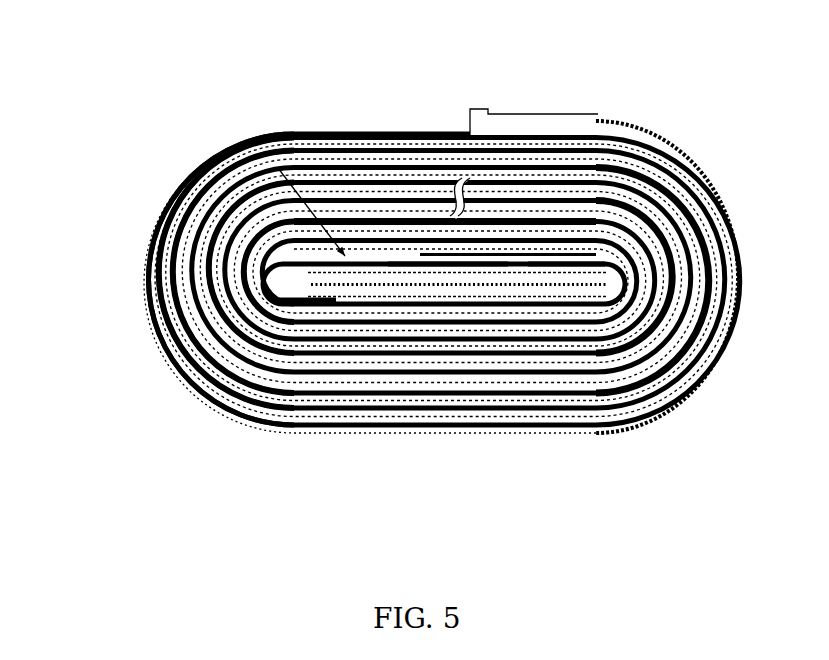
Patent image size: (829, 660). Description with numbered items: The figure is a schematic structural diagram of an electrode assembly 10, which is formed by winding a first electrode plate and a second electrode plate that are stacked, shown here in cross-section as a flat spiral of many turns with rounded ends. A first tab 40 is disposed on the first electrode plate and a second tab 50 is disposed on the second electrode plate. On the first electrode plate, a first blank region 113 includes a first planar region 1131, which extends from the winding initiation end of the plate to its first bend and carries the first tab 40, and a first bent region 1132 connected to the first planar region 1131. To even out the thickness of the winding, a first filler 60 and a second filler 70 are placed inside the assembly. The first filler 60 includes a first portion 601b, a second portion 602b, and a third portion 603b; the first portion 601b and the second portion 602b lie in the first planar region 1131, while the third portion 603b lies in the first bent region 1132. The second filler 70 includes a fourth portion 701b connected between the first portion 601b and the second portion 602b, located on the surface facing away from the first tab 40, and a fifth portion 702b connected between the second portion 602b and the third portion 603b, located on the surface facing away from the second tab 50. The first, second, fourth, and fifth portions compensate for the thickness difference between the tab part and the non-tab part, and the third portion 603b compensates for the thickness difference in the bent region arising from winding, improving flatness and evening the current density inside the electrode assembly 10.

The electrode assembly 10 is at (168, 58).
The first blank region 113 is at (128, 113).
The first planar region 1131 is at (218, 135).
The first bent region 1132 is at (166, 184).
The first tab 40 is at (540, 257).
The second tab 50 is at (362, 223).
The second filler 70 is at (530, 62).
The fourth portion 701b is at (503, 252).
The fifth portion 702b is at (388, 253).
The first filler 60 is at (543, 472).
The first portion 601b is at (573, 262).
The second portion 602b is at (449, 262).
The third portion 603b is at (290, 293).